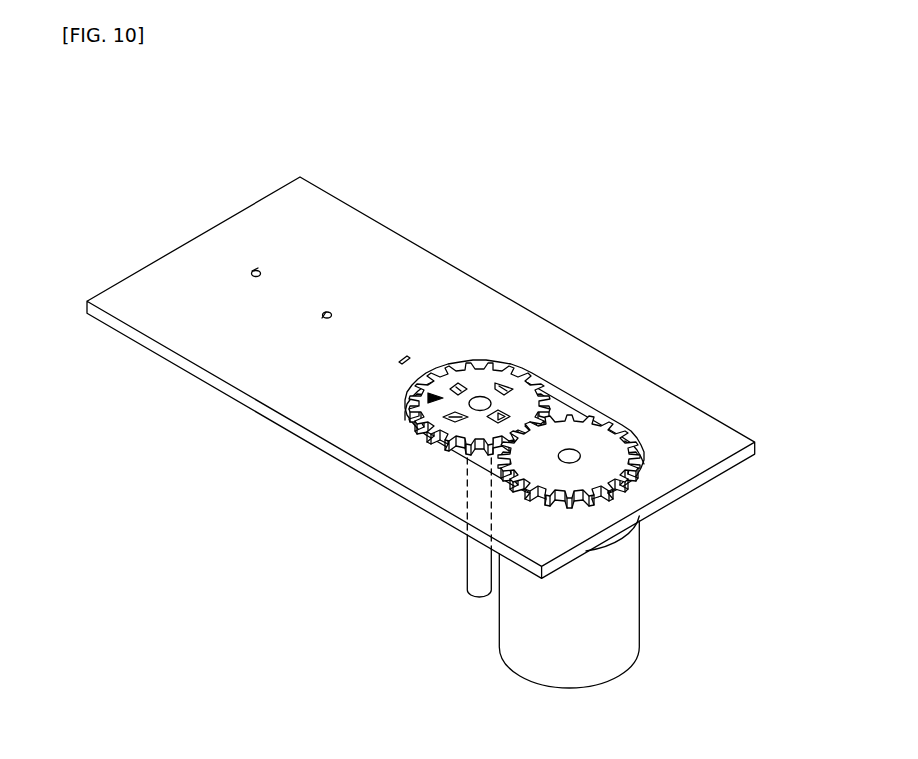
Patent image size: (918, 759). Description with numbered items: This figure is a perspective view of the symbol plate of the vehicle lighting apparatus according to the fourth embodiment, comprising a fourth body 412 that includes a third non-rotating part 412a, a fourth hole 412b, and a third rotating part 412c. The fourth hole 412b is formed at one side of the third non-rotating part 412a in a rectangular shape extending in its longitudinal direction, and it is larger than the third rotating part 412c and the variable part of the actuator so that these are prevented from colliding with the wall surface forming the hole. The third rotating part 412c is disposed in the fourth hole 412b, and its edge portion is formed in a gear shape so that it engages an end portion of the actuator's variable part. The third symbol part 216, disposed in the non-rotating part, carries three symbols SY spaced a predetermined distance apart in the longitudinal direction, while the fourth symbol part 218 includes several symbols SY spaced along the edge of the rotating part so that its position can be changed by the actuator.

The third symbol part 216 is at (574, 222).
The symbols SY is at (257, 270).
The fourth symbol part 218 is at (412, 391).
The fourth body 412 is at (777, 320).
The third non-rotating part 412a is at (600, 374).
The fourth hole 412b is at (617, 416).
The third rotating part 412c is at (487, 378).